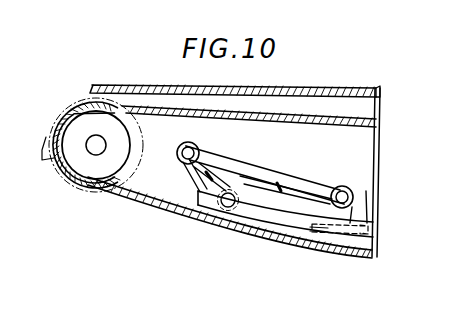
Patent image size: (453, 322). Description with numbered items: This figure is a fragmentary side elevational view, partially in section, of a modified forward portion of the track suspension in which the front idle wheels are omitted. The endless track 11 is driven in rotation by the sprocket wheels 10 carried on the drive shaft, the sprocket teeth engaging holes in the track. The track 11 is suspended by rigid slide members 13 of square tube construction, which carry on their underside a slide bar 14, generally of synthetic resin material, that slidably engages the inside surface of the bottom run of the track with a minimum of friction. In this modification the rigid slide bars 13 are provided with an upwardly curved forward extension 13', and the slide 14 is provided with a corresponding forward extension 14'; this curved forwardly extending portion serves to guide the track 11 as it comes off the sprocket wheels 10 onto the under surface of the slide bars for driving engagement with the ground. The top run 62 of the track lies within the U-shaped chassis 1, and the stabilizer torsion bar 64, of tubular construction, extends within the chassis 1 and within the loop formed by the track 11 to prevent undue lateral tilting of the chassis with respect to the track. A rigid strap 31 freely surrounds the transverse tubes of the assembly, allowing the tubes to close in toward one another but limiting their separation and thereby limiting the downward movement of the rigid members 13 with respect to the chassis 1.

The chassis 1 is at (272, 88).
The sprocket wheels 10 is at (78, 133).
The endless track 11 is at (151, 208).
The rigid slide members 13 is at (372, 212).
The forward extension of slide bar 13' is at (286, 195).
The slide bar 14 is at (285, 246).
The forward extension of slide 14' is at (207, 241).
The rigid strap 31 is at (192, 176).
The top run 62 is at (290, 118).
The U-shaped torsion bar 64 is at (258, 167).